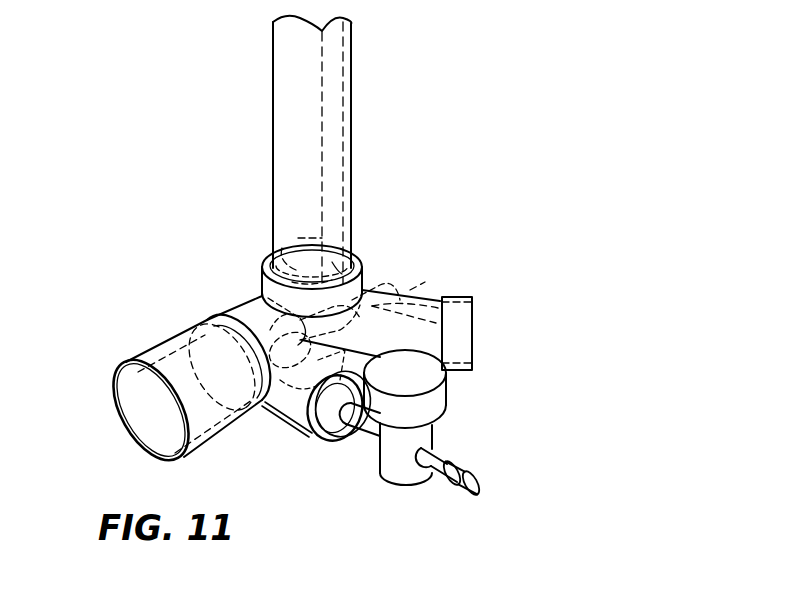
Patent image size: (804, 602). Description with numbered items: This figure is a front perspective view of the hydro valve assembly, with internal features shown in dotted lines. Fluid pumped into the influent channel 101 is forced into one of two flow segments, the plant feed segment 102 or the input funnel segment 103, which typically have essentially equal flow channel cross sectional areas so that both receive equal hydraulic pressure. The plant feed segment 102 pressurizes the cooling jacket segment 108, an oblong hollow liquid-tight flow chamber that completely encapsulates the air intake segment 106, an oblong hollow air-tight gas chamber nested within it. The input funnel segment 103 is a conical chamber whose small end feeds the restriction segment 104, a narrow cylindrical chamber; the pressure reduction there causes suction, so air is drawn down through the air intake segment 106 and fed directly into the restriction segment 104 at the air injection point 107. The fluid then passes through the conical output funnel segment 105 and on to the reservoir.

The influent channel 101 is at (141, 413).
The plant feed segment 102 is at (246, 297).
The input funnel segment 103 is at (226, 304).
The restriction segment 104 is at (293, 430).
The output funnel segment 105 is at (477, 323).
The air intake segment 106 is at (333, 158).
The air injection point 107 is at (387, 328).
The cooling jacket segment 108 is at (293, 137).